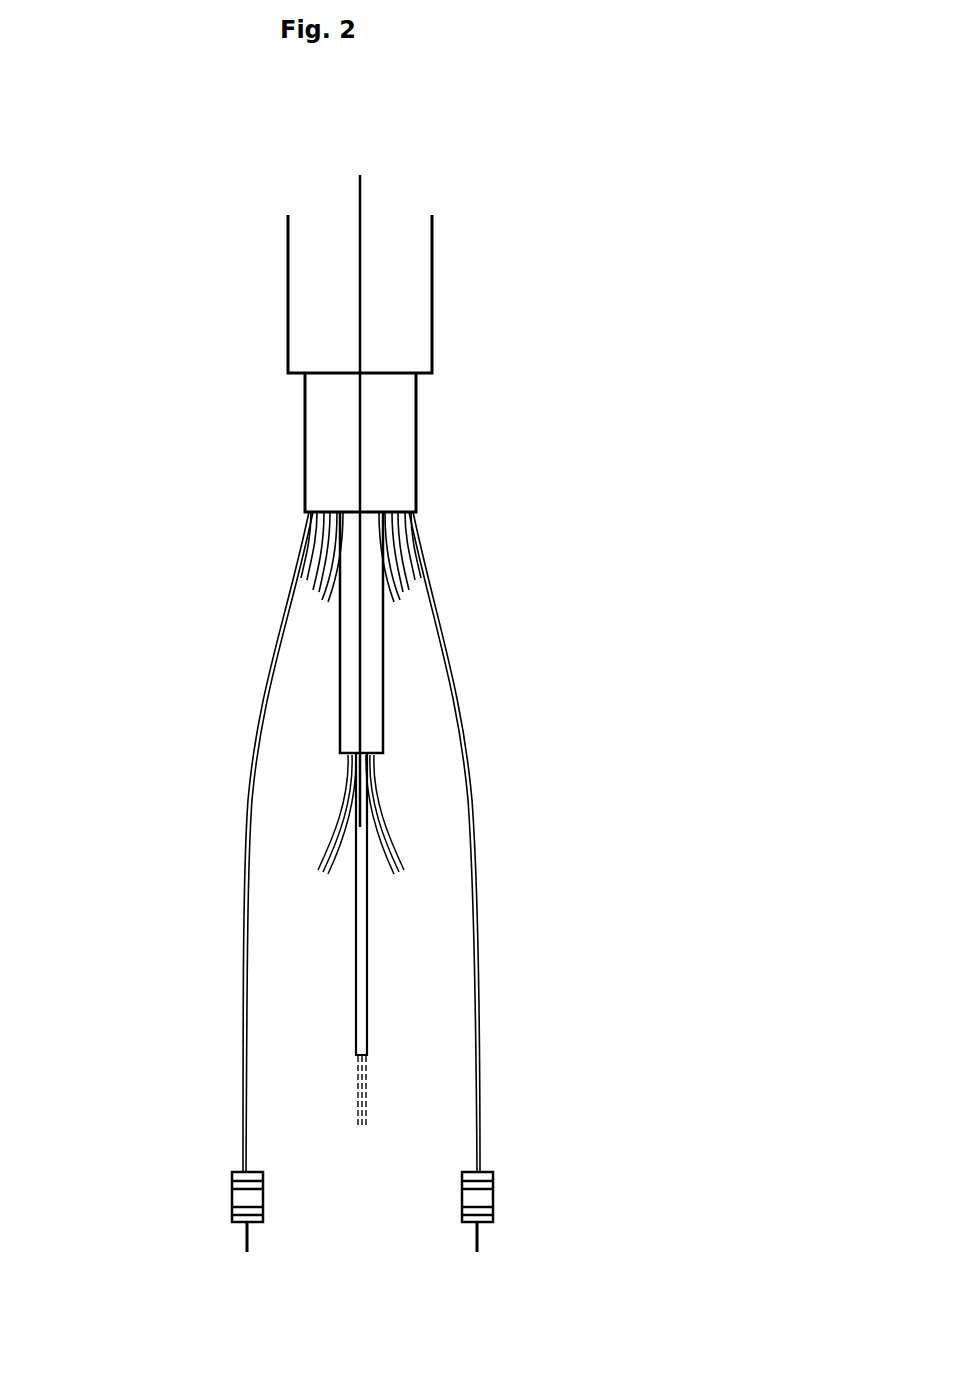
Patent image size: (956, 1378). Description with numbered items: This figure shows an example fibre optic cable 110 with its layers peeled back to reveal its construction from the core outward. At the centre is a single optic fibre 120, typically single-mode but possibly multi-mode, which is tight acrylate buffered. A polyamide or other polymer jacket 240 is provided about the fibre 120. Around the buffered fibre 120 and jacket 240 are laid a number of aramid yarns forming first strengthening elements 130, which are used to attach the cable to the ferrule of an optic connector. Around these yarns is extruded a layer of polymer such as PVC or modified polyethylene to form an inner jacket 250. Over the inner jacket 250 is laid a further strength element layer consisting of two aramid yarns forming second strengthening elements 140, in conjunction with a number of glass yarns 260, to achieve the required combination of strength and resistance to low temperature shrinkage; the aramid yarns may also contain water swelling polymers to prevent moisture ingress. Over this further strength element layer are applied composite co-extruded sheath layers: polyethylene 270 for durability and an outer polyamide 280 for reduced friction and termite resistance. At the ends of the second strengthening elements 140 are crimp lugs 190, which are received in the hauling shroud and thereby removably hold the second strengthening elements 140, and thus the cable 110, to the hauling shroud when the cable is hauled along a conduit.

The fibre optic cable 110 is at (486, 479).
The optic fibre 120 is at (358, 1164).
The first strengthening element 130 is at (432, 879).
The second strengthening element 140 is at (221, 794).
The crimp lug 190 is at (188, 1209).
The jacket 240 is at (403, 1016).
The inner jacket 250 is at (418, 697).
The glass yarns 260 is at (277, 550).
The polyethylene layer 270 is at (271, 425).
The polyamide layer 280 is at (257, 253).